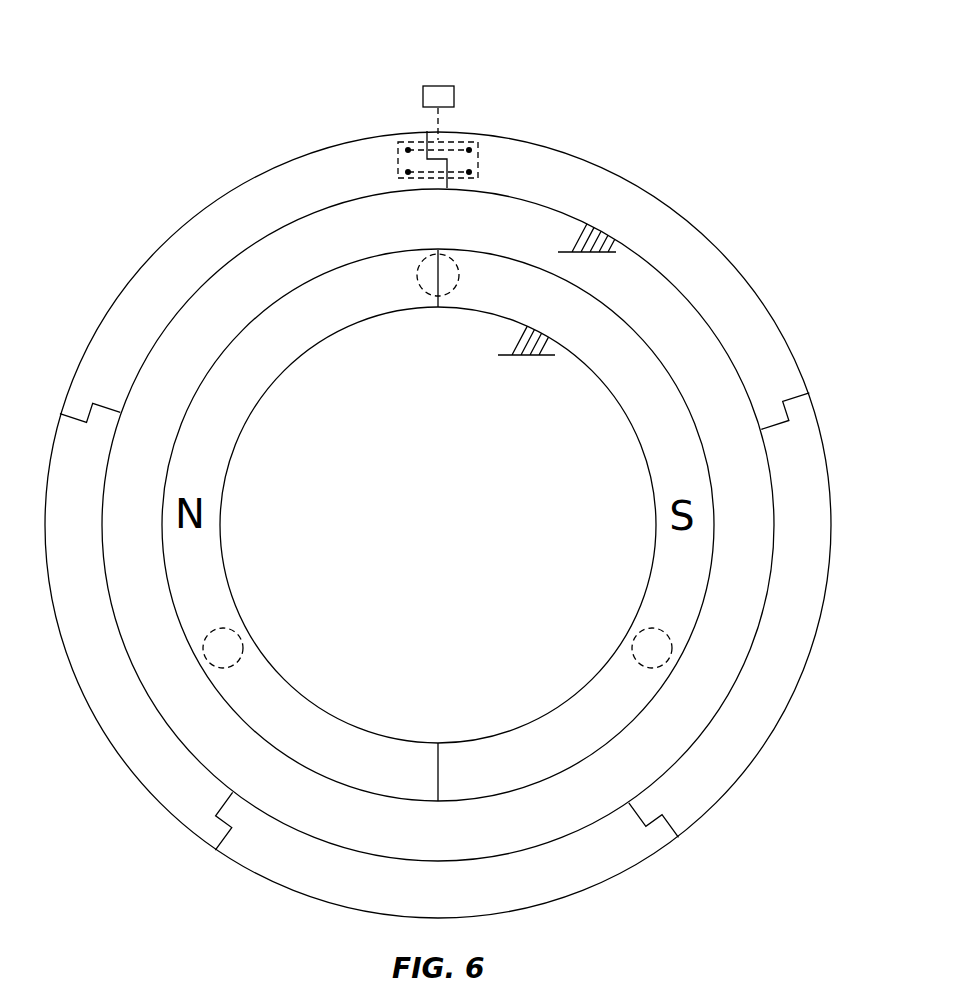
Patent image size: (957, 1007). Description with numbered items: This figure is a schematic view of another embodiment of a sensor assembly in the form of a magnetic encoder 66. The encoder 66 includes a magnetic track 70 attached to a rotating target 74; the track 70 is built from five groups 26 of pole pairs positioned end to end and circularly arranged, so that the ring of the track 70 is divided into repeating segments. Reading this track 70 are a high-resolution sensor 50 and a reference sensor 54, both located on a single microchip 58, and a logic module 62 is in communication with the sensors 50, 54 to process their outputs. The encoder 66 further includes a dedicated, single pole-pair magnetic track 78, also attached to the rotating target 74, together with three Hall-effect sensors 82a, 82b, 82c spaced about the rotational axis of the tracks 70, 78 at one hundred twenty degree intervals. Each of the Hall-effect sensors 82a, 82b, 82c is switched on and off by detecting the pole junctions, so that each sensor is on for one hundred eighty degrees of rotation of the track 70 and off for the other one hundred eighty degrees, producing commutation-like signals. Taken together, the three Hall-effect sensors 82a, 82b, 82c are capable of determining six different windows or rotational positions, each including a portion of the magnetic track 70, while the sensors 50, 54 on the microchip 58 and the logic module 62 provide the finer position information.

The group of pole pairs 26 is at (218, 228).
The high-resolution sensor 50 is at (476, 165).
The reference sensor 54 is at (423, 180).
The microchip 58 is at (480, 161).
The logic module 62 is at (423, 96).
The magnetic encoder 66 is at (677, 123).
The magnetic track 70 is at (738, 243).
The rotating target 74 is at (608, 253).
The single pole-pair magnetic track 78 is at (616, 428).
The Hall-effect sensor 82a is at (455, 284).
The Hall-effect sensor 82b is at (637, 623).
The Hall-effect sensor 82c is at (238, 632).